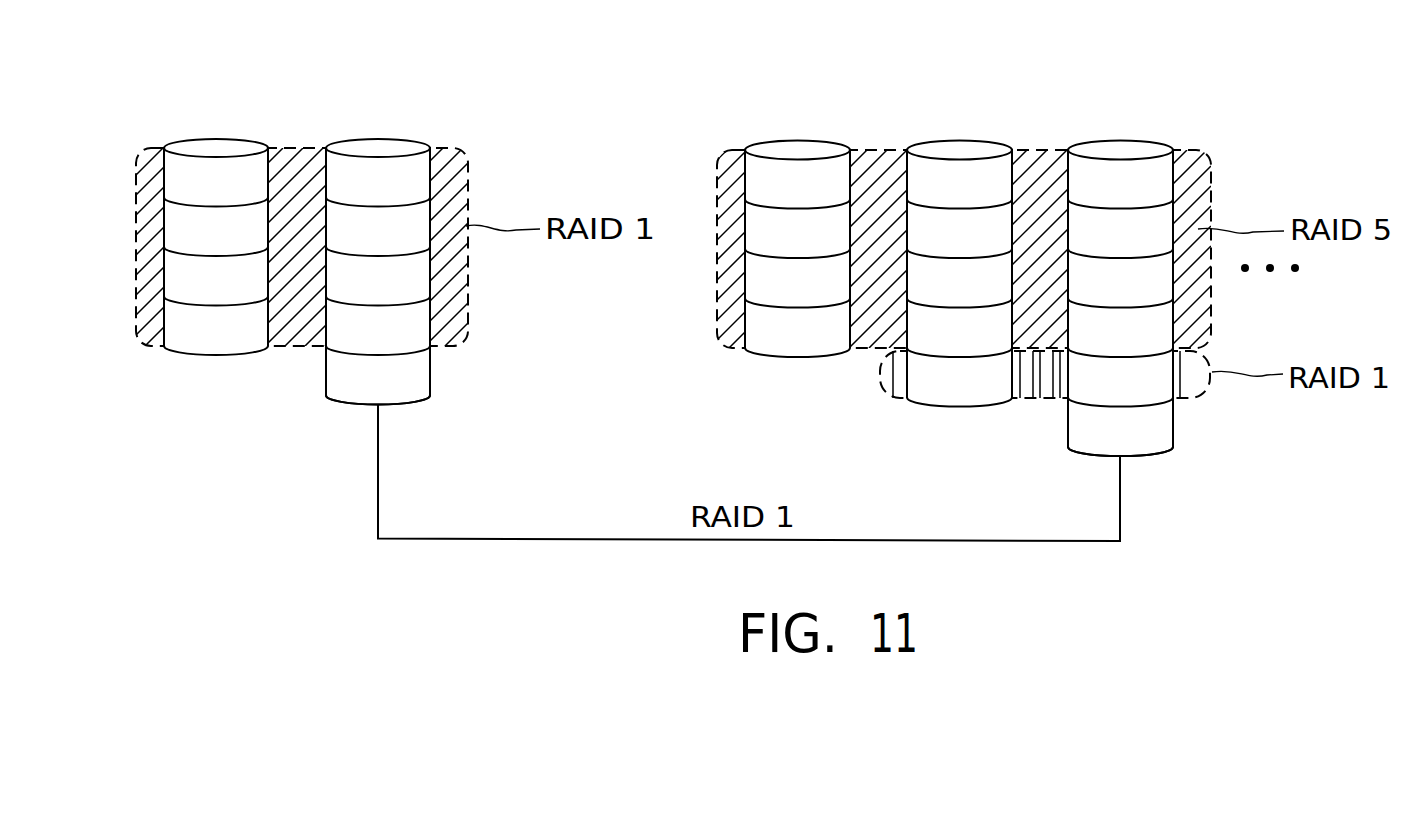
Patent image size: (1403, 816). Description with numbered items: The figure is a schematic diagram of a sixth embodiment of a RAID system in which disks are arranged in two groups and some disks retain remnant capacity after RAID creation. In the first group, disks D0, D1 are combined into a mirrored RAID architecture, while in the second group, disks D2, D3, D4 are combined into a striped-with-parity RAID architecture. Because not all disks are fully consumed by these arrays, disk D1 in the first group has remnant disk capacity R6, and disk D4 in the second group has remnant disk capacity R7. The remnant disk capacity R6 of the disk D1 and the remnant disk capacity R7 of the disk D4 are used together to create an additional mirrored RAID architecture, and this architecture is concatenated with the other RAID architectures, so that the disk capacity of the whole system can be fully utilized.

The disk D0 is at (219, 147).
The disk D1 is at (379, 147).
The disk D2 is at (801, 149).
The disk D3 is at (961, 149).
The disk D4 is at (1123, 149).
The remnant disk capacity R6 is at (378, 375).
The remnant disk capacity R7 is at (1120, 427).